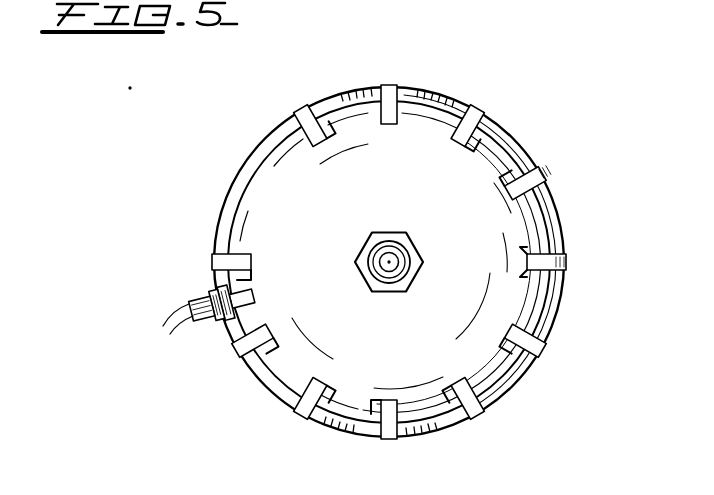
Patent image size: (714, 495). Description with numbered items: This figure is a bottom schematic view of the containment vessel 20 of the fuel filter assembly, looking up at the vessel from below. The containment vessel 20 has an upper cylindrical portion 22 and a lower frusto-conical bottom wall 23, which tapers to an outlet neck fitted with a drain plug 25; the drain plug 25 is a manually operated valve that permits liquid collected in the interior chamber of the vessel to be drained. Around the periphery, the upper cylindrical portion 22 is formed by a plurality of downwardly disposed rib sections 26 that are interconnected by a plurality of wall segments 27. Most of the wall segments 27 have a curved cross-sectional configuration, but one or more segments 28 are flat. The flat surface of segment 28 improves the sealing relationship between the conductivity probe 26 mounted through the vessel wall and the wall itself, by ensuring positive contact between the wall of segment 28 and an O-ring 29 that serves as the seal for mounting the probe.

The containment vessel 20 is at (432, 80).
The upper cylindrical portion 22 is at (483, 130).
The lower frusto-conical bottom wall 23 is at (341, 217).
The drain plug 25 is at (563, 267).
The rib sections 26 is at (216, 330).
The wall segments 27 is at (510, 371).
The flat segment 28 is at (228, 230).
The O-ring 29 is at (232, 330).